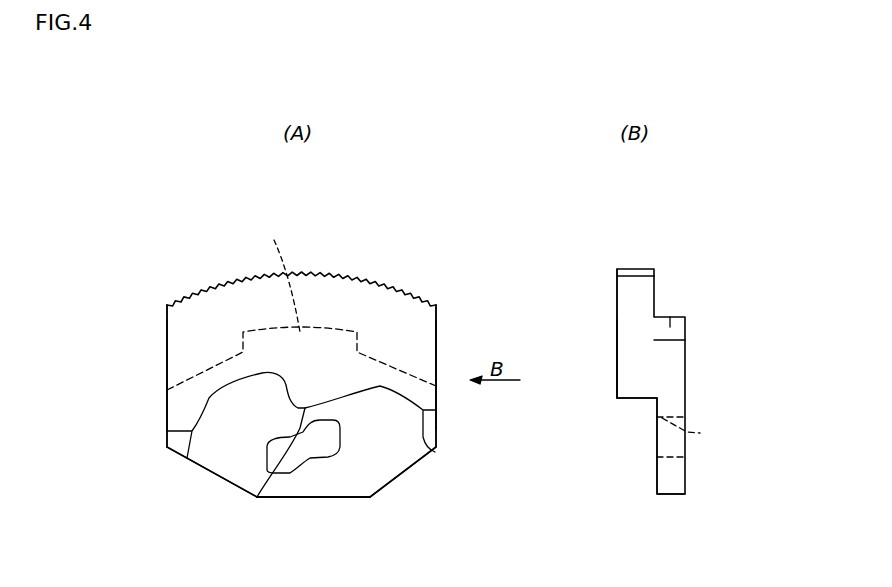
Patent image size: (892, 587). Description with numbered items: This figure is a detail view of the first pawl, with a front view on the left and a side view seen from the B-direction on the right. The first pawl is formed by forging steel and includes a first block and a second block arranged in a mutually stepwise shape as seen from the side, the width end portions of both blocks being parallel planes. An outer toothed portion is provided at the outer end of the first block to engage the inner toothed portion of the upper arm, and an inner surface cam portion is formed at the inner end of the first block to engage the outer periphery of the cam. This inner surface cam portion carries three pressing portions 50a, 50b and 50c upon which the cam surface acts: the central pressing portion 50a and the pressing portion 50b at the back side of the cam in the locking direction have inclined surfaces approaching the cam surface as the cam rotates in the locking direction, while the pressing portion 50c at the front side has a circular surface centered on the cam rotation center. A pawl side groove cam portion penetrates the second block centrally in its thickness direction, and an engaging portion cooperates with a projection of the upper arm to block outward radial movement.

The pressing portion 50a is at (257, 497).
The pressing portion 50b is at (187, 458).
The pressing portion 50c is at (432, 452).